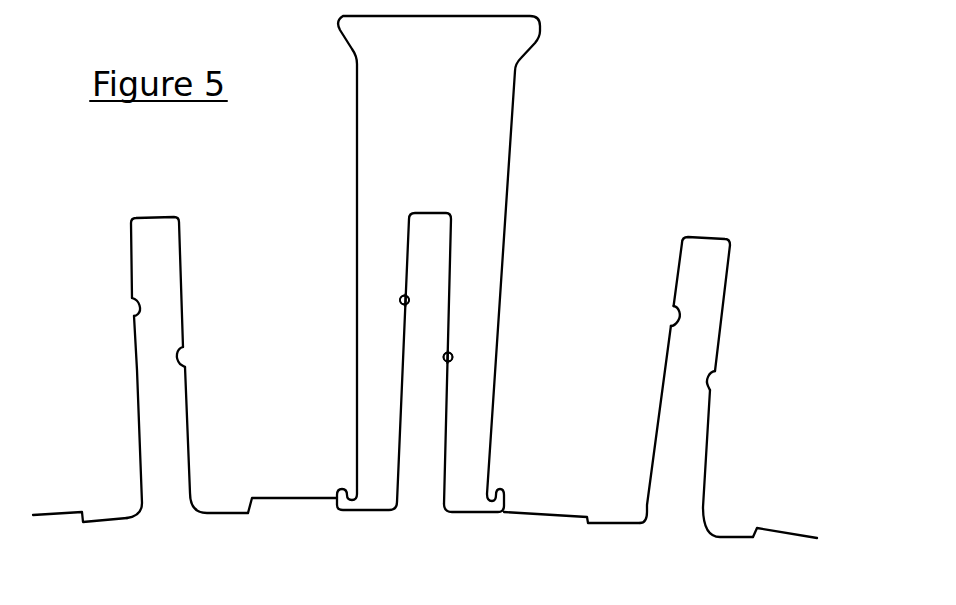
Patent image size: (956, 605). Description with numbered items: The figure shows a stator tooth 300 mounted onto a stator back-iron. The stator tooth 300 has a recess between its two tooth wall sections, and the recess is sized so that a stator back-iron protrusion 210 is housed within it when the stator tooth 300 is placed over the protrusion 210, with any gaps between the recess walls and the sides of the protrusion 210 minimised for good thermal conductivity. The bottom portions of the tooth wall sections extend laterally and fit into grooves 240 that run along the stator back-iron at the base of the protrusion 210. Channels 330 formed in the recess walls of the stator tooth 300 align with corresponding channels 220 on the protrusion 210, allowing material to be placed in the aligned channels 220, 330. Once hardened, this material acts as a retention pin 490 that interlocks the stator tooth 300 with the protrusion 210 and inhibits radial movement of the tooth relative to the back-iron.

The stator tooth 300 is at (512, 117).
The stator back-iron protrusion 210 is at (420, 457).
The channel 220 is at (401, 302).
The channel 330 is at (408, 299).
The retention pin 490 is at (401, 297).
The groove 240 is at (605, 521).